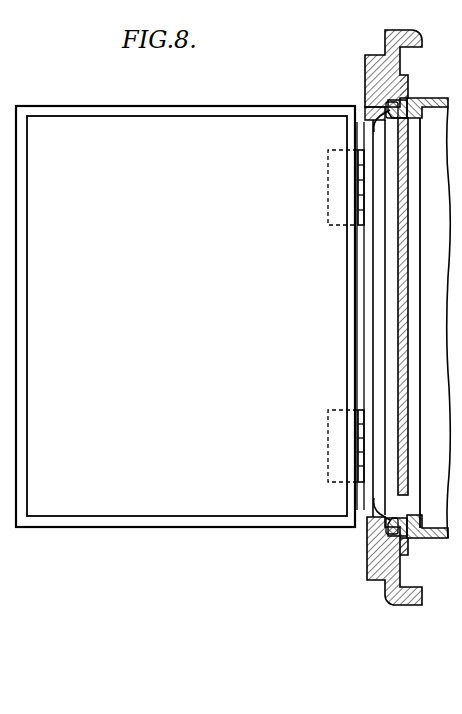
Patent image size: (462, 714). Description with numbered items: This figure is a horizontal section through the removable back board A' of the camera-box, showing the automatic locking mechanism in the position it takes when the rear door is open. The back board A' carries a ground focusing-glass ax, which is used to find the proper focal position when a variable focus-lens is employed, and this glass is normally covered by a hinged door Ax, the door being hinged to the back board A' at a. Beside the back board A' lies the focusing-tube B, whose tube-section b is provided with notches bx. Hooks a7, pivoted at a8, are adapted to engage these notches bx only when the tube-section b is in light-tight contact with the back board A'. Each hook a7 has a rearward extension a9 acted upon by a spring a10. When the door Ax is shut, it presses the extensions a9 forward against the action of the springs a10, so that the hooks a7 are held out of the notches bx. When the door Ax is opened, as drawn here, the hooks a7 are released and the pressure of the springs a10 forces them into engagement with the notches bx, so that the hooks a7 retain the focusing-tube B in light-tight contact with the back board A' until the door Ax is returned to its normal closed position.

The hinged door Ax is at (185, 316).
The back board A' is at (385, 314).
The hinge a is at (335, 225).
The hooks a7 is at (418, 97).
The pivot of hooks a8 is at (366, 548).
The rearward extensions of hooks a9 is at (373, 498).
The spring a10 is at (400, 122).
The ground focusing-glass ax is at (408, 321).
The focusing-tube B is at (437, 322).
The focusing tube-section b is at (436, 107).
The notches bx is at (440, 97).